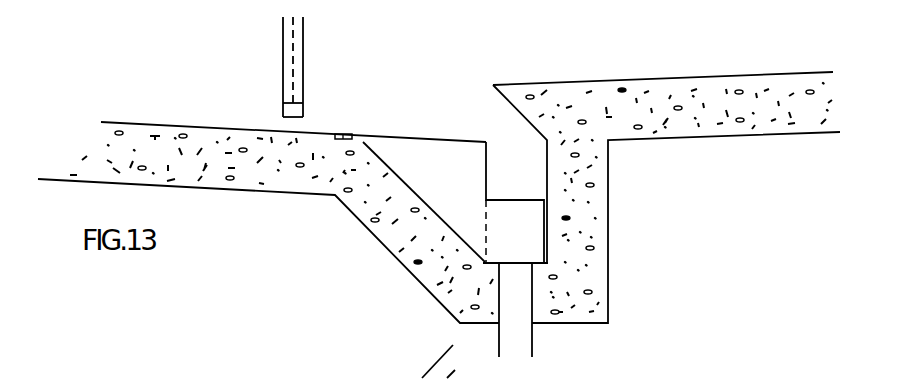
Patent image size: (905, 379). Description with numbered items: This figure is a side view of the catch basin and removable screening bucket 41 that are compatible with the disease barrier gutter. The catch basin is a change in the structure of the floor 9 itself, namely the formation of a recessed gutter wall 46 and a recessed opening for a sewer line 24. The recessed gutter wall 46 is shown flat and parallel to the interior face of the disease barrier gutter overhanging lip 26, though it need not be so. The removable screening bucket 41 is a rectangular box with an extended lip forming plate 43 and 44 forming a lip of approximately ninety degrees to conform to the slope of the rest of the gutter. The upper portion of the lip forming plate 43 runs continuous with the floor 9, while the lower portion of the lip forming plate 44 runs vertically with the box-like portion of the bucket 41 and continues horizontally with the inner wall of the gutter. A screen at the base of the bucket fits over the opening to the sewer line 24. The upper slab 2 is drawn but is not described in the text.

The upper concrete slab 2 is at (656, 80).
The floor 9 is at (198, 124).
The sewer line 24 is at (515, 310).
The disease barrier gutter overhanging lip 26 is at (503, 95).
The removable screening bucket 41 is at (515, 245).
The upper lip forming plate 43 is at (393, 136).
The lower lip forming plate 44 is at (487, 169).
The recessed gutter wall 46 is at (394, 173).